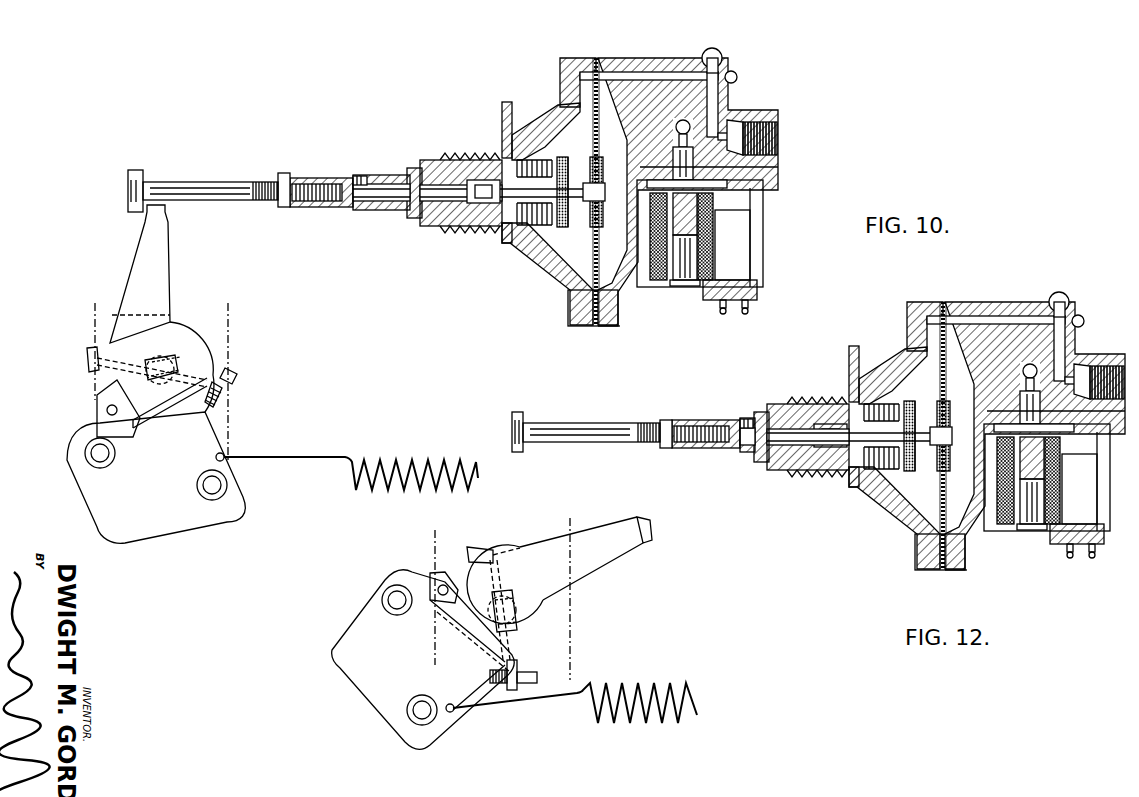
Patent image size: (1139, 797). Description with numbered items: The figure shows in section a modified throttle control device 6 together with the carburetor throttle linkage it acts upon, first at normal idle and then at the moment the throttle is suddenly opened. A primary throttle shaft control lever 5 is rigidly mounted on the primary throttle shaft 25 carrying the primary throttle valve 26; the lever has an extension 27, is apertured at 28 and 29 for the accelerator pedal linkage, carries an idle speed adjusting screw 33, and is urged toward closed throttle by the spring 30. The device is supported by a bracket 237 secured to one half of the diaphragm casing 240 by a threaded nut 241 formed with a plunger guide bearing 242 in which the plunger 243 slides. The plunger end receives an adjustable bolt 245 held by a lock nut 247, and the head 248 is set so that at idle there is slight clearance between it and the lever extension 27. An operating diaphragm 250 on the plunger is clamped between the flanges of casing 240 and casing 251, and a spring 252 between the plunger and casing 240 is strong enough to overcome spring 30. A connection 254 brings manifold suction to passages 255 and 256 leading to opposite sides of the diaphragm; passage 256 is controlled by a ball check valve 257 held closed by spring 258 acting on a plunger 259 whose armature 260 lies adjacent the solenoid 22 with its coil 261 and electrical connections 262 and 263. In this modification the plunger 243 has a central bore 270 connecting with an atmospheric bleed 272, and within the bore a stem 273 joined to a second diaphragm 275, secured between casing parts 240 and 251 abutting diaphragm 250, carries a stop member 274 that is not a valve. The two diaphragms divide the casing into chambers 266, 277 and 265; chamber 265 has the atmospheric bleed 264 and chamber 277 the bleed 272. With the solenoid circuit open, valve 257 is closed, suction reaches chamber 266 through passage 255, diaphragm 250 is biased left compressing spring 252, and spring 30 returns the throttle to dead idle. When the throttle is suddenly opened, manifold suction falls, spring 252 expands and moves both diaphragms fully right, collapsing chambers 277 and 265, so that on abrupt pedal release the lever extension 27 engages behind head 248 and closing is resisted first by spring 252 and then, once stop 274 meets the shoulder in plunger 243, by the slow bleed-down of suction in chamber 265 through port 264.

In FIG. 10, the primary throttle shaft control lever 5 is at (232, 518).
In FIG. 12, the primary throttle shaft control lever 5 is at (345, 680).
In FIG. 10, the throttle control device 6 is at (728, 56).
In FIG. 12, the throttle control device 6 is at (1076, 278).
In FIG. 10, the solenoid 22 is at (773, 224).
In FIG. 10, the primary throttle shaft 25 is at (165, 362).
In FIG. 12, the primary throttle shaft 25 is at (505, 610).
In FIG. 10, the primary throttle valve 26 is at (98, 352).
In FIG. 12, the primary throttle valve 26 is at (507, 548).
In FIG. 10, the lever extension 27 is at (170, 260).
In FIG. 12, the lever extension 27 is at (612, 522).
In FIG. 10, the lever aperture 28 is at (222, 485).
In FIG. 10, the lever aperture 29 is at (92, 455).
In FIG. 10, the throttle closing spring 30 is at (413, 460).
In FIG. 12, the throttle closing spring 30 is at (640, 690).
In FIG. 10, the idle speed adjusting screw 33 is at (238, 376).
In FIG. 12, the idle speed adjusting screw 33 is at (518, 672).
In FIG. 10, the bracket 237 is at (502, 112).
In FIG. 12, the bracket 237 is at (848, 352).
In FIG. 10, the diaphragm casing 240 is at (576, 326).
In FIG. 12, the diaphragm casing 240 is at (920, 568).
In FIG. 10, the threaded nut 241 is at (425, 225).
In FIG. 12, the threaded nut 241 is at (768, 470).
In FIG. 10, the plunger guide bearing 242 is at (412, 222).
In FIG. 10, the plunger 243 is at (312, 208).
In FIG. 12, the plunger 243 is at (680, 448).
In FIG. 10, the bolt 245 is at (205, 200).
In FIG. 10, the lock nut 247 is at (282, 208).
In FIG. 10, the bolt head 248 is at (143, 175).
In FIG. 12, the bolt head 248 is at (523, 414).
In FIG. 10, the operating diaphragm 250 is at (590, 248).
In FIG. 12, the operating diaphragm 250 is at (925, 490).
In FIG. 10, the diaphragm casing 251 is at (612, 326).
In FIG. 12, the diaphragm casing 251 is at (960, 570).
In FIG. 10, the spring 252 is at (520, 142).
In FIG. 12, the spring 252 is at (905, 362).
In FIG. 10, the connection 254 is at (777, 137).
In FIG. 10, the passage 255 is at (718, 100).
In FIG. 12, the passage 255 is at (1000, 340).
In FIG. 10, the passage 256 is at (732, 126).
In FIG. 12, the passage 256 is at (1062, 375).
In FIG. 10, the ball check valve 257 is at (683, 120).
In FIG. 12, the ball check valve 257 is at (1030, 365).
In FIG. 10, the valve spring 258 is at (700, 218).
In FIG. 12, the valve spring 258 is at (1045, 464).
In FIG. 10, the valve plunger 259 is at (768, 170).
In FIG. 10, the armature 260 is at (705, 190).
In FIG. 12, the armature 260 is at (1050, 434).
In FIG. 10, the solenoid coil 261 is at (712, 250).
In FIG. 12, the solenoid coil 261 is at (1058, 496).
In FIG. 10, the electrical connection 262 is at (722, 310).
In FIG. 12, the electrical connection 262 is at (1070, 553).
In FIG. 10, the electrical connection 263 is at (748, 310).
In FIG. 12, the electrical connection 263 is at (1095, 553).
In FIG. 10, the atmospheric bleed 264 is at (622, 265).
In FIG. 12, the atmospheric bleed 264 is at (968, 510).
In FIG. 10, the chamber 265 is at (606, 272).
In FIG. 12, the chamber 265 is at (960, 360).
In FIG. 10, the chamber 266 is at (548, 243).
In FIG. 12, the chamber 266 is at (900, 495).
In FIG. 10, the central bore 270 is at (386, 178).
In FIG. 10, the atmospheric bleed 272 is at (360, 176).
In FIG. 12, the atmospheric bleed 272 is at (743, 419).
In FIG. 10, the stem 273 is at (581, 205).
In FIG. 12, the stem 273 is at (892, 472).
In FIG. 10, the stop member 274 is at (476, 180).
In FIG. 12, the stop member 274 is at (848, 420).
In FIG. 10, the diaphragm 275 is at (552, 157).
In FIG. 12, the diaphragm 275 is at (960, 400).
In FIG. 10, the chamber 277 is at (586, 250).
In FIG. 12, the chamber 277 is at (950, 490).